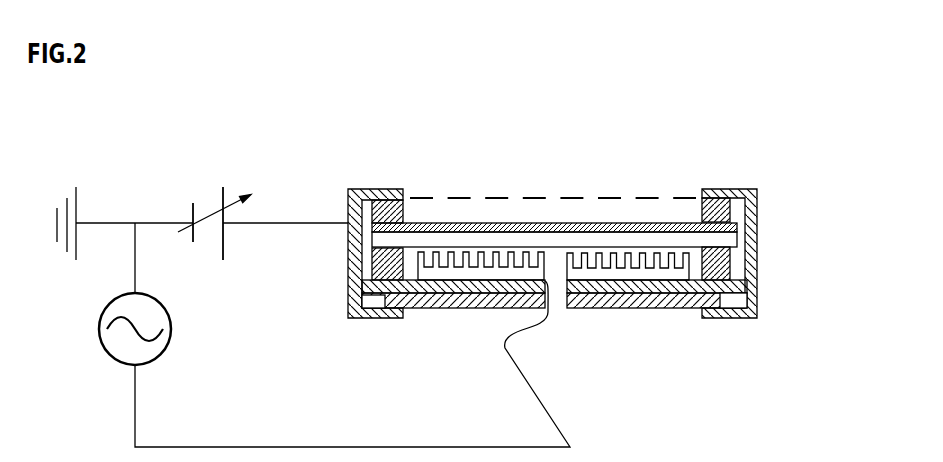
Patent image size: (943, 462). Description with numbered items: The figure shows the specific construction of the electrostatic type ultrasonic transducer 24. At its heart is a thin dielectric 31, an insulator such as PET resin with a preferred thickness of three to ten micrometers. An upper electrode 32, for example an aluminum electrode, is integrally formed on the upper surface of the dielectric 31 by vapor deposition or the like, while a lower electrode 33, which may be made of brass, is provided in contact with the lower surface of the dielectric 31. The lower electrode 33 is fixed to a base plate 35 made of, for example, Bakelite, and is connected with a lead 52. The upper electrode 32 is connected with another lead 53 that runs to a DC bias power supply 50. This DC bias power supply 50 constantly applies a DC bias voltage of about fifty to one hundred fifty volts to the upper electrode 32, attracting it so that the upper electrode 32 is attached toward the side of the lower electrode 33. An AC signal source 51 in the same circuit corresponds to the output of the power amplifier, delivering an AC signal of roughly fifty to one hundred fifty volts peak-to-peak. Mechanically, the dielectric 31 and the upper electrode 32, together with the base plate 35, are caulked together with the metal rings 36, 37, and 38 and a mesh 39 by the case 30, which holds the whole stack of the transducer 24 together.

The ultrasonic transducer 24 is at (566, 105).
The case 30 is at (383, 318).
The dielectric 31 is at (458, 233).
The upper electrode 32 is at (666, 222).
The lower electrode 33 is at (483, 273).
The base plate 35 is at (443, 283).
The metal ring 36 is at (376, 212).
The metal ring 37 is at (376, 268).
The metal ring 38 is at (378, 300).
The mesh 39 is at (536, 198).
The DC bias power supply 50 is at (224, 186).
The AC signal source 51 is at (172, 329).
The lead 52 is at (537, 389).
The lead 53 is at (272, 226).